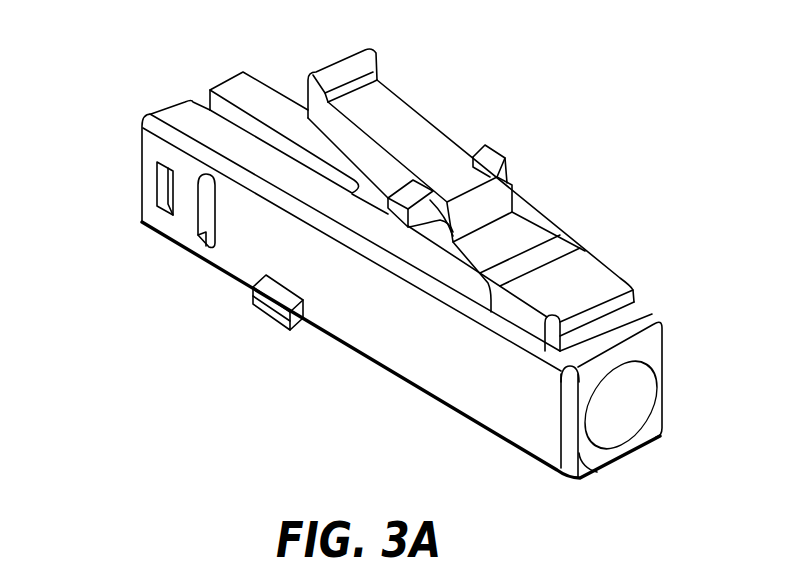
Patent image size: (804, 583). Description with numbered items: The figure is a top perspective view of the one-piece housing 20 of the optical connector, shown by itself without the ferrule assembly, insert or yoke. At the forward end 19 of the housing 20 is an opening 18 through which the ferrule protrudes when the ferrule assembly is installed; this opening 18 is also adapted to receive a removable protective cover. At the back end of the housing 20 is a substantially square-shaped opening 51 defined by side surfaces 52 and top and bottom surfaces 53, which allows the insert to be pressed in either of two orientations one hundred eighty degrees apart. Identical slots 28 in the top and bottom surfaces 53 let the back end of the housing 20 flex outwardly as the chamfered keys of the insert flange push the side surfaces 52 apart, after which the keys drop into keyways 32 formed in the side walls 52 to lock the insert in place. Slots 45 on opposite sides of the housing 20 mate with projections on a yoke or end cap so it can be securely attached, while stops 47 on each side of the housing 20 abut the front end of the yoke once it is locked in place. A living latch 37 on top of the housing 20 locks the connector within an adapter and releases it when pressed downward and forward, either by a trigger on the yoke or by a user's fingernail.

The one-piece housing 20 is at (612, 64).
The substantially square-shaped opening 51 is at (123, 158).
The side surfaces 52 is at (170, 225).
The top and bottom surfaces 53 is at (228, 88).
The slots 28 is at (263, 142).
The living latch 37 is at (418, 135).
The slots 45 is at (162, 193).
The keyways 32 is at (201, 243).
The stops 47 is at (268, 317).
The opening 18 is at (632, 394).
The forward end 19 is at (583, 458).